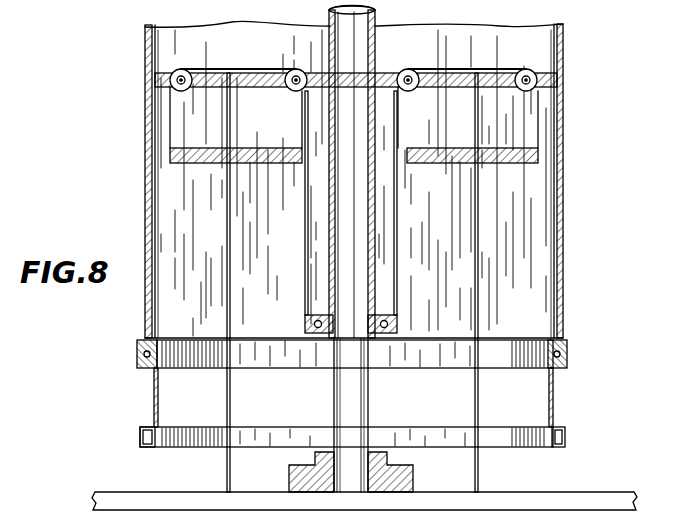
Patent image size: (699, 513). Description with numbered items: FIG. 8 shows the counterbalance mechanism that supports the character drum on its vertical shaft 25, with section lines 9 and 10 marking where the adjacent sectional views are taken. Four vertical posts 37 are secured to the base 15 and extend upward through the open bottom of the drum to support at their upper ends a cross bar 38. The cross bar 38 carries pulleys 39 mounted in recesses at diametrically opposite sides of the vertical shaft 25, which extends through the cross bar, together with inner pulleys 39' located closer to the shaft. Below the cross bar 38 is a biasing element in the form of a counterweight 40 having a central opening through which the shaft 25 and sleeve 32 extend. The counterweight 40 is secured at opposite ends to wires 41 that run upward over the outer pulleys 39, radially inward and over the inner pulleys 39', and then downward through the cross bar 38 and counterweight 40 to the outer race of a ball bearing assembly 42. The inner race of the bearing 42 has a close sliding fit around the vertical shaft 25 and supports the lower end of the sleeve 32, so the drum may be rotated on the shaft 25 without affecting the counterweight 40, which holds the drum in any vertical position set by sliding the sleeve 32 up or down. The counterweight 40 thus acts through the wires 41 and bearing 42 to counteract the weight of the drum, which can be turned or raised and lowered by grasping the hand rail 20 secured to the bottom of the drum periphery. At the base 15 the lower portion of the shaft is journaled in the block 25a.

The section line 9- 9 is at (127, 58).
The section line 10- 10 is at (129, 138).
The base 15 is at (129, 491).
The hand rail 20 is at (140, 432).
The vertical shaft 25 is at (378, 403).
The block 25a is at (416, 478).
The sleeve 32 is at (377, 56).
The vertical posts 37 is at (227, 390).
The cross bar 38 is at (447, 88).
The pulleys 39 is at (411, 97).
The inner pulleys 39' is at (297, 96).
The counterweight 40 is at (448, 165).
The wires 41 is at (303, 232).
The ball bearing assembly 42 is at (398, 326).